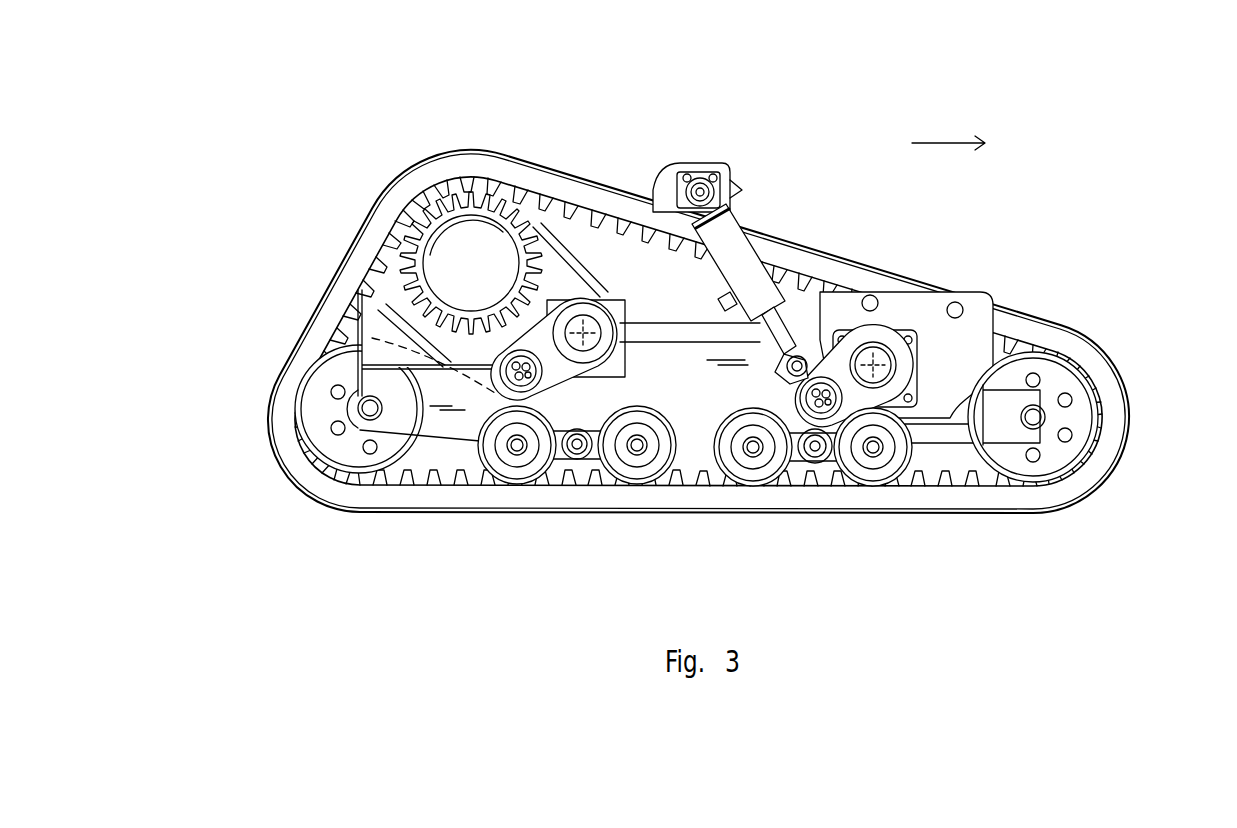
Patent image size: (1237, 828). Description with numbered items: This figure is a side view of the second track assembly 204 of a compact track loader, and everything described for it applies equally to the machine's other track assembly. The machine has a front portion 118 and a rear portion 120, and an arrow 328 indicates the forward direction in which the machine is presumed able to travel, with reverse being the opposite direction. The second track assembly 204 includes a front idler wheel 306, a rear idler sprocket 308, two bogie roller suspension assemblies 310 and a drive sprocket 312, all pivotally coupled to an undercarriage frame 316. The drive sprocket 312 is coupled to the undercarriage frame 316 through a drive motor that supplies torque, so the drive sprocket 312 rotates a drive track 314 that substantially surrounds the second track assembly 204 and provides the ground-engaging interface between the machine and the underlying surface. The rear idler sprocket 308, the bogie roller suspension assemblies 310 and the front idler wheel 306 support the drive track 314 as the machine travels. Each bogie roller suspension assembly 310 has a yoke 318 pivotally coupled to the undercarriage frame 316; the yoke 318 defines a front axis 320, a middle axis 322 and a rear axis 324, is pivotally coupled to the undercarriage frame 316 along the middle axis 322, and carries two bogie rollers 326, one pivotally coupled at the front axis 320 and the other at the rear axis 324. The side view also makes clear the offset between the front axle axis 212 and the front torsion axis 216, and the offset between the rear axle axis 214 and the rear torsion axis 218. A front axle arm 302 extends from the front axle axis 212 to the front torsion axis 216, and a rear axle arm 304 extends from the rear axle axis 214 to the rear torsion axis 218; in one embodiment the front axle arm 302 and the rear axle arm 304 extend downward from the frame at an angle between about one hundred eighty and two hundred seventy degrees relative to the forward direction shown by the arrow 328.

The front portion 118 is at (1138, 335).
The rear portion 120 is at (268, 263).
The second track assembly 204 is at (1025, 298).
The front axle axis 212 is at (868, 460).
The rear axle axis 214 is at (345, 324).
The front torsion axis 216 is at (877, 360).
The rear torsion axis 218 is at (586, 302).
The front axle arm 302 is at (812, 333).
The rear axle arm 304 is at (563, 368).
The front idler wheel 306 is at (1090, 440).
The rear idler sprocket 308 is at (312, 406).
The bogie roller suspension assembly 310 is at (577, 458).
The drive sprocket 312 is at (440, 190).
The drive track 314 is at (506, 158).
The undercarriage frame 316 is at (683, 362).
The yoke 318 is at (545, 450).
The front axis 320 is at (637, 457).
The middle axis 322 is at (583, 456).
The rear axis 324 is at (517, 454).
The bogie roller 326 is at (498, 448).
The arrow 328 is at (950, 143).